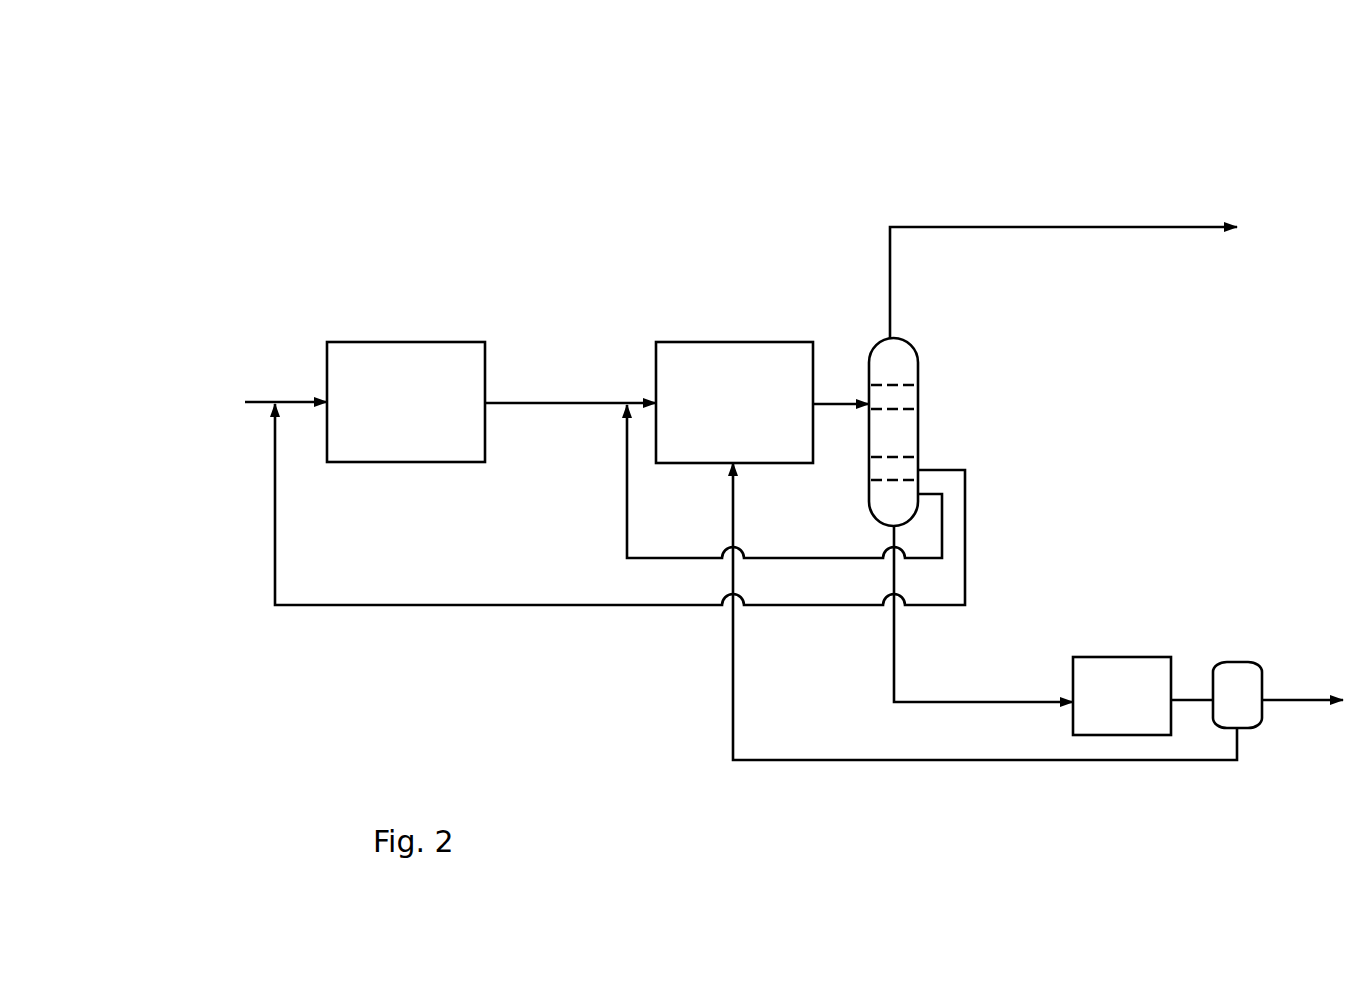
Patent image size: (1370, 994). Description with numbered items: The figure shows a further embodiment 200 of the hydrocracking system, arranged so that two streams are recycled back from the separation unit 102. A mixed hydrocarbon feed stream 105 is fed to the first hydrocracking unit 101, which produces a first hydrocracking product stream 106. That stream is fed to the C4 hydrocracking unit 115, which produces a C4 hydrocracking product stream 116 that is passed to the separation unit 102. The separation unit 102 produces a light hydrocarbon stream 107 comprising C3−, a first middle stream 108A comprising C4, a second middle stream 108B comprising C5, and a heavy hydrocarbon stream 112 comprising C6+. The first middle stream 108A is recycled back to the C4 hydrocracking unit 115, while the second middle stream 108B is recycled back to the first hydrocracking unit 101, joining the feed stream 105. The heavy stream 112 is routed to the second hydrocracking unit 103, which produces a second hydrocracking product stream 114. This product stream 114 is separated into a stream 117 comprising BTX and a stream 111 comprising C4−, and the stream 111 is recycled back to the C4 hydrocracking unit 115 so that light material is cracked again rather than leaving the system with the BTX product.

The system embodiment 200 is at (288, 95).
The first hydrocracking unit 101 is at (406, 402).
The C4 hydrocracking unit 115 is at (734, 402).
The separation unit 102 is at (878, 338).
The second hydrocracking unit 103 is at (1122, 696).
The stream comprising BTX 117 is at (1310, 698).
The mixed hydrocarbon feed stream 105 is at (300, 402).
The first hydrocracking product stream 106 is at (513, 400).
The C4 hydrocracking product stream 116 is at (836, 402).
The light hydrocarbon stream 107 is at (1073, 227).
The first middle stream 108A is at (843, 555).
The second middle stream 108B is at (523, 603).
The heavy hydrocarbon stream 112 is at (977, 706).
The stream comprising C4− 111 is at (1010, 776).
The second hydrocracking product stream 114 is at (1198, 698).